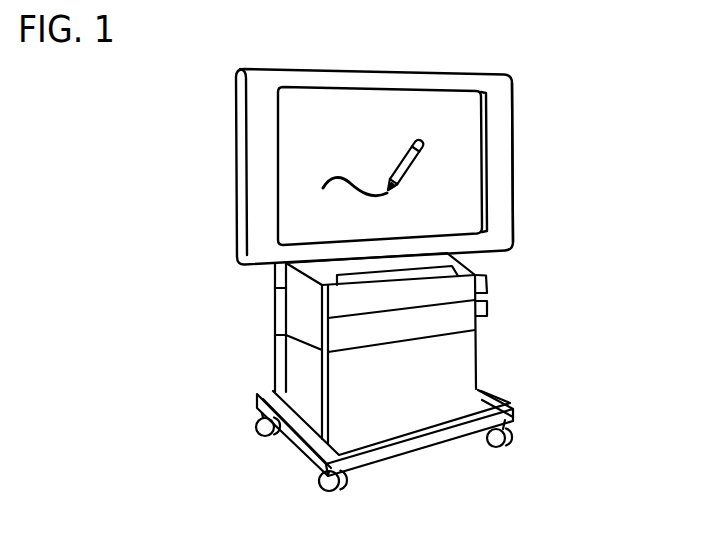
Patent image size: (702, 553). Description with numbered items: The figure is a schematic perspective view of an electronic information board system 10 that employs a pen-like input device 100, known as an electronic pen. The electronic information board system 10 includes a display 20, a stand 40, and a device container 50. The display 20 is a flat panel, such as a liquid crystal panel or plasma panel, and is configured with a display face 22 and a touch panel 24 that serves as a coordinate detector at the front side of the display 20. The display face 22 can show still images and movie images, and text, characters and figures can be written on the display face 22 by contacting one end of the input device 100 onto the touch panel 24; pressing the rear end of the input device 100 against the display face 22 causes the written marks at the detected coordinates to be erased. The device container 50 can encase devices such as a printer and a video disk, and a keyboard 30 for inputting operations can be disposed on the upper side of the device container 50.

The electronic information board system 10 is at (522, 77).
The display 20 is at (442, 72).
The display face 22 is at (290, 145).
The touch panel 24 is at (493, 122).
The keyboard 30 is at (455, 257).
The stand 40 is at (286, 441).
The device container 50 is at (481, 363).
The input device 100 is at (411, 162).